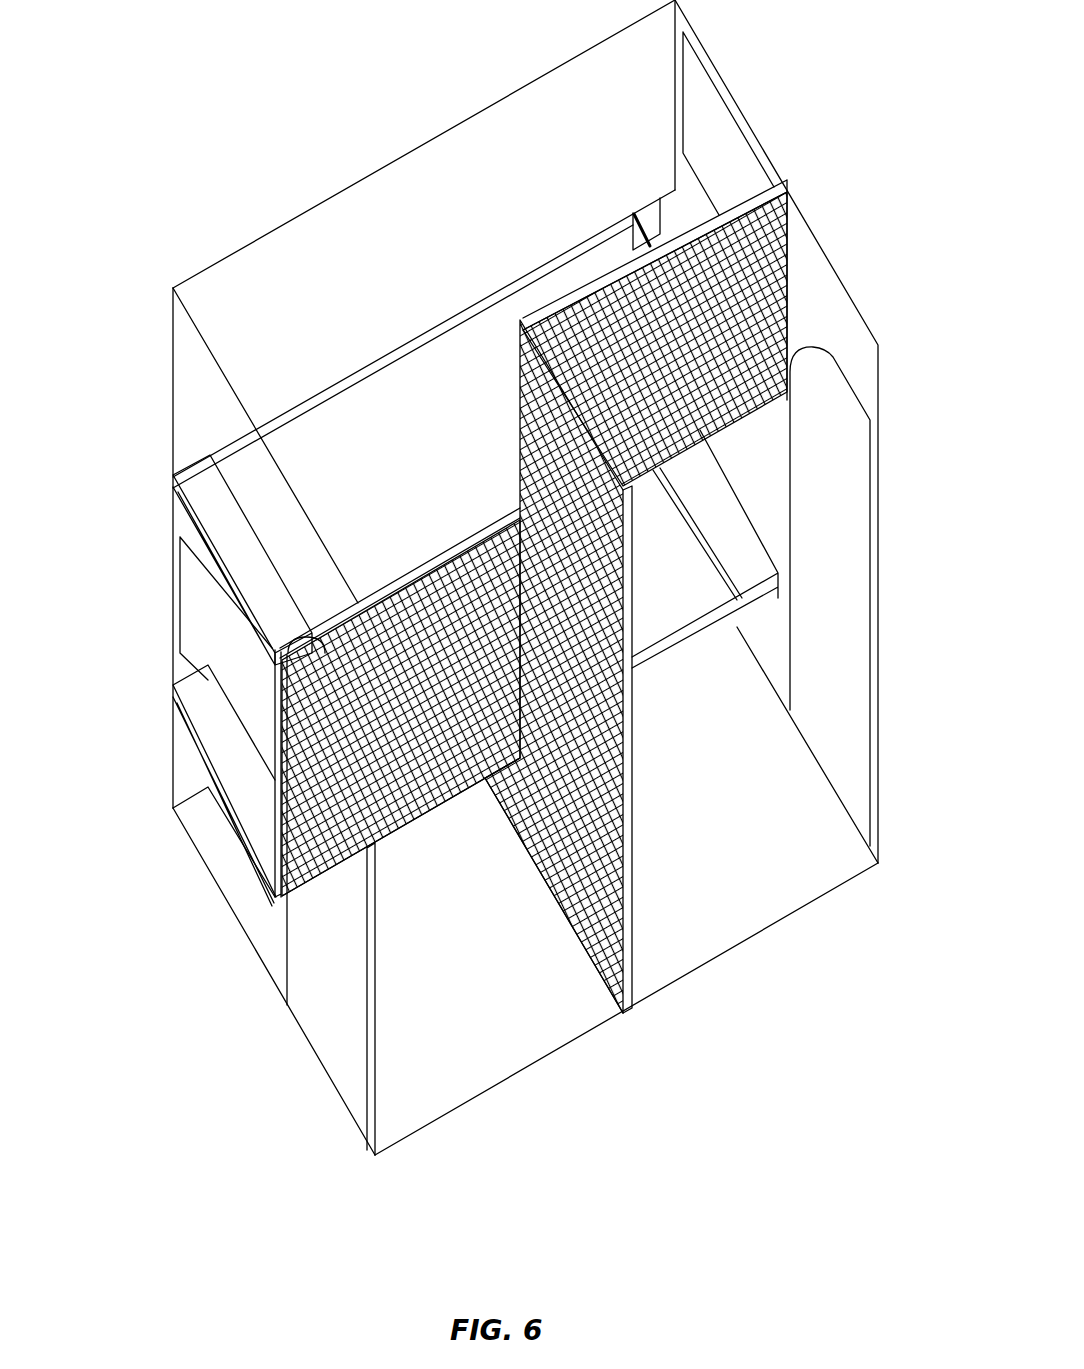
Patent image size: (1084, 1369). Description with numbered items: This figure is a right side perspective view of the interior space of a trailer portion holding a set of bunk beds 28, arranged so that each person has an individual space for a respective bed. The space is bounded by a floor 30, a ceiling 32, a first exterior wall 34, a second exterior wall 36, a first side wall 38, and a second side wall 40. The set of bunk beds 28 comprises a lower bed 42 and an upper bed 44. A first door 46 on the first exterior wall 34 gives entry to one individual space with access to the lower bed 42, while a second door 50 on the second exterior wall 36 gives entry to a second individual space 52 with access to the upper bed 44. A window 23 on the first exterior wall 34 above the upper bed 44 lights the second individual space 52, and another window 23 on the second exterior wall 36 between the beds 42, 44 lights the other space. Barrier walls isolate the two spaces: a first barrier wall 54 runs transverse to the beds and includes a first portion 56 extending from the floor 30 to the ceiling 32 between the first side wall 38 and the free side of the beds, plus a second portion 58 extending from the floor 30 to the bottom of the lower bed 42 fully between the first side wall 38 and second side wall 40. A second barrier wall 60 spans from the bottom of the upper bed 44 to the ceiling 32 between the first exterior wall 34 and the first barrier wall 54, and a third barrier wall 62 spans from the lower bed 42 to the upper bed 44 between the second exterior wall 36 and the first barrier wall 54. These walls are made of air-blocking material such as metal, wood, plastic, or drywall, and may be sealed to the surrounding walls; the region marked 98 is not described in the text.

The window 23 is at (203, 617).
The set of bunk beds 28 is at (150, 663).
The floor 30 is at (535, 1046).
The ceiling 32 is at (400, 187).
The first exterior wall 34 is at (847, 250).
The second exterior wall 36 is at (242, 983).
The first side wall 38 is at (695, 1000).
The second side wall 40 is at (283, 200).
The lower bed 42 is at (687, 605).
The upper bed 44 is at (447, 460).
The first door 46 is at (840, 565).
The second door 50 is at (343, 1050).
The second individual space 52 is at (400, 1093).
The first barrier wall 54 is at (527, 917).
The first portion 56 is at (613, 807).
The second portion 58 is at (508, 820).
The second barrier wall 60 is at (627, 288).
The third barrier wall 62 is at (403, 604).
The interior cavity 98 is at (798, 803).